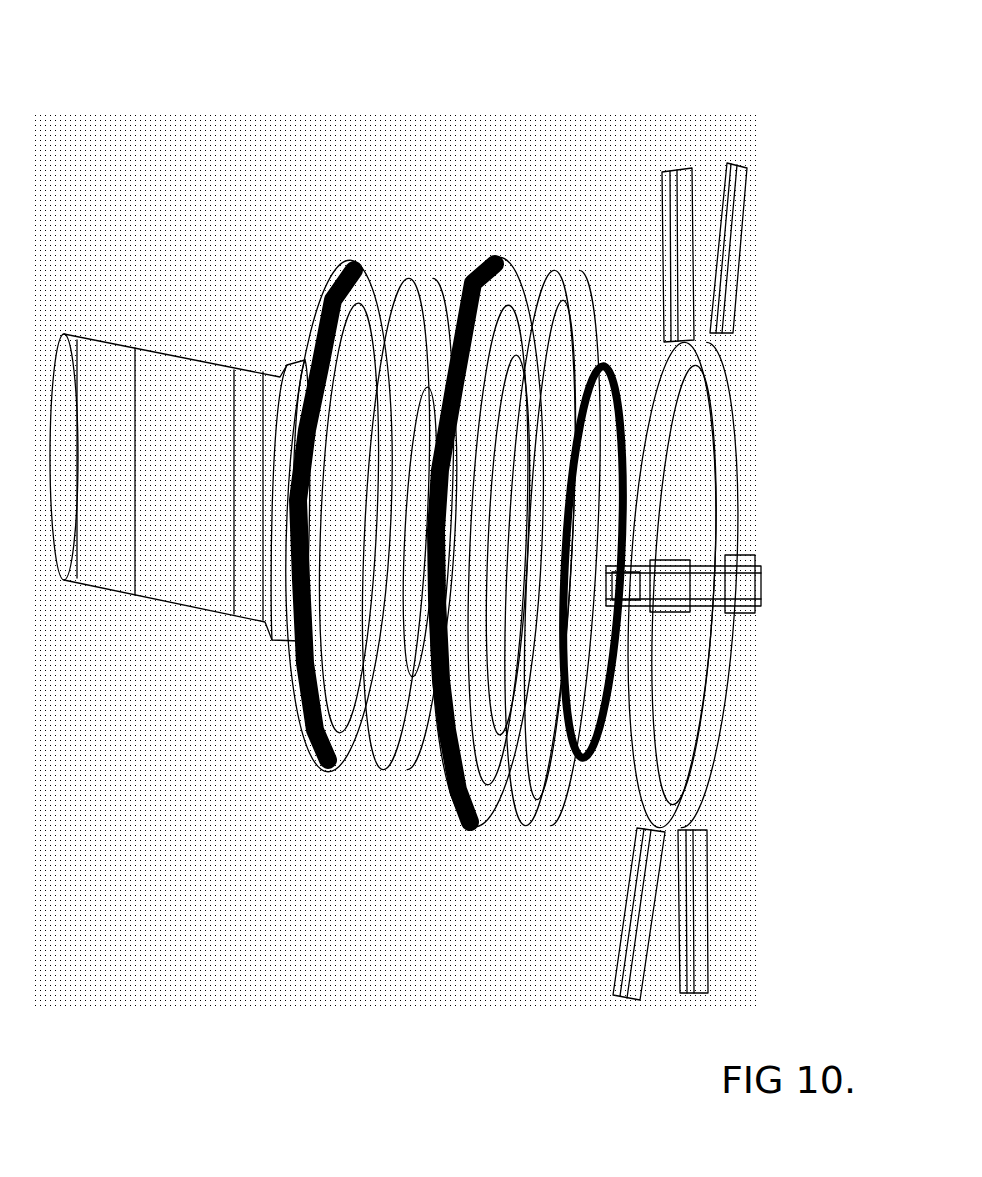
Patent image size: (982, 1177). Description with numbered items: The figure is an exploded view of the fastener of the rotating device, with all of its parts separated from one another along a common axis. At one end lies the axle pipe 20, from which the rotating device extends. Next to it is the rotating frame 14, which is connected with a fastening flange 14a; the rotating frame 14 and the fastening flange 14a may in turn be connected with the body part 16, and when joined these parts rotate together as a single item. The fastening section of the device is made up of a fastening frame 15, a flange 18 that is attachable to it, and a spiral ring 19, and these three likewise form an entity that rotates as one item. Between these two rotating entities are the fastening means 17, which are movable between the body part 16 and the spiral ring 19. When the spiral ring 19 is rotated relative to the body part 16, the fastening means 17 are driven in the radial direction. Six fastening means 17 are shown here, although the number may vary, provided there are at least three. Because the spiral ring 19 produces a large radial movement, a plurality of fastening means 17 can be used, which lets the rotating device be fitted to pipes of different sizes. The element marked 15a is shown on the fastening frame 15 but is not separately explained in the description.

The rotating frame 14 is at (308, 643).
The fastening flange 14a is at (360, 670).
The fastening frame 15 is at (440, 687).
The gear hub 15a is at (483, 415).
The body part 16 is at (740, 478).
The fastening means 17 is at (703, 900).
The flange 18 is at (500, 700).
The spiral ring 19 is at (560, 700).
The axle pipe 20 is at (92, 453).